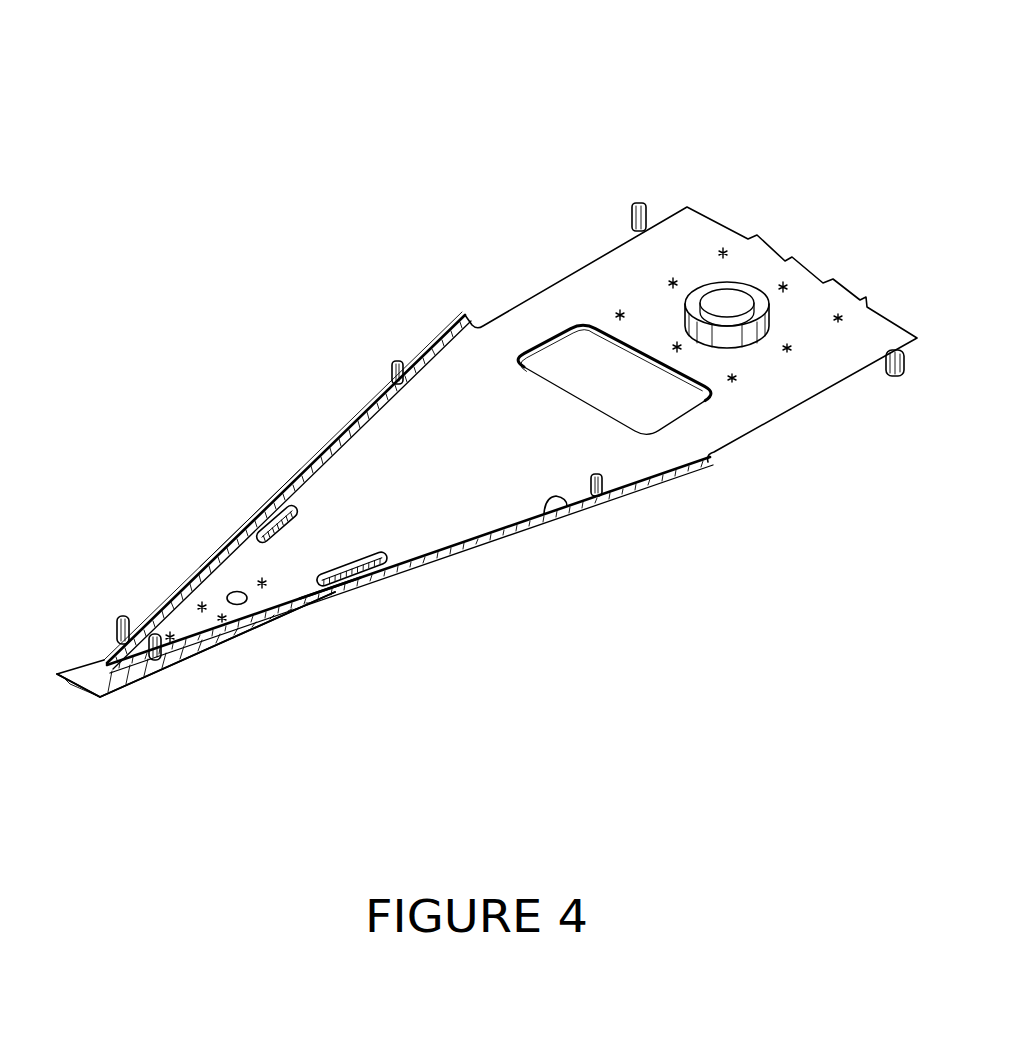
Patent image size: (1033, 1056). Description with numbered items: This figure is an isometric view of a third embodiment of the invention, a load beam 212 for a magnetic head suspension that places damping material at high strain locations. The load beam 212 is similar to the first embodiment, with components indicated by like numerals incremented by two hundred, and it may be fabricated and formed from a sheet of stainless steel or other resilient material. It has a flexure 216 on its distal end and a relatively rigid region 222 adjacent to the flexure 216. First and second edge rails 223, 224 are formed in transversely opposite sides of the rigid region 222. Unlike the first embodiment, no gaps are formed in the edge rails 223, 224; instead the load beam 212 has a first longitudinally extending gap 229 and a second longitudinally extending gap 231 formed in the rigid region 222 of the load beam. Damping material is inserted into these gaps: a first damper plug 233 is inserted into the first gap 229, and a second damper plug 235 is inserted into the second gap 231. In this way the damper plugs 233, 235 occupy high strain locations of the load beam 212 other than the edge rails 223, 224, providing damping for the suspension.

The load beam 212 is at (452, 196).
The flexure 216 is at (130, 683).
The rigid region 222 is at (627, 492).
The first edge rail 223 is at (385, 398).
The second edge rail 224 is at (565, 498).
The first longitudinally extending gap 229 is at (278, 508).
The second longitudinally extending gap 231 is at (385, 560).
The first damper plug 233 is at (240, 538).
The second damper plug 235 is at (333, 583).